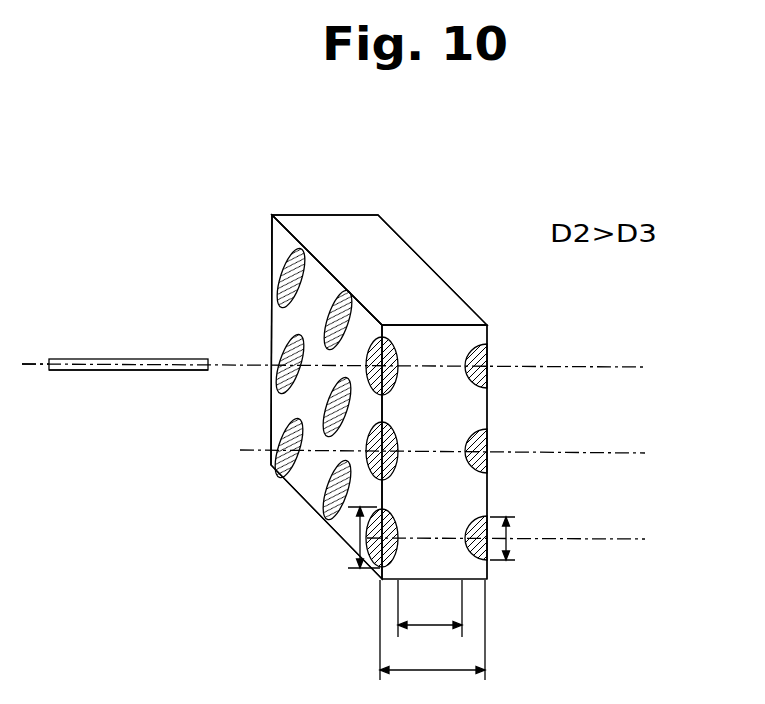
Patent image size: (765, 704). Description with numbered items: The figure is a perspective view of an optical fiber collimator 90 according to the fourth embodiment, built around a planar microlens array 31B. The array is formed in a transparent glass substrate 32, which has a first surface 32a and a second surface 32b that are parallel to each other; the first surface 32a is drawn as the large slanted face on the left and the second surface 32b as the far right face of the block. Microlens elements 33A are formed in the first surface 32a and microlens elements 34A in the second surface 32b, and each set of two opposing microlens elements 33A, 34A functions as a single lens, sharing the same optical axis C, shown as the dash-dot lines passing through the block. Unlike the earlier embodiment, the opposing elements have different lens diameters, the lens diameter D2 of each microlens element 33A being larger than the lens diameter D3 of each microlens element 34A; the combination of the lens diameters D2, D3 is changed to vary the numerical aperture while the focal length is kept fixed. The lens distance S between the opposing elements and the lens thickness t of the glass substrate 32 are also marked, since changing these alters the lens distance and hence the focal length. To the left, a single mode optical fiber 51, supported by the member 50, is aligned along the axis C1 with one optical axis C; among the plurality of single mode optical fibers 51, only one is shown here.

The optical fiber collimator 90 is at (245, 192).
The planar microlens array 31B is at (352, 212).
The glass substrate 32 is at (303, 213).
The first surface 32a is at (277, 233).
The second surface 32b is at (488, 328).
The microlens element 33A is at (284, 279).
The microlens element 34A is at (485, 373).
The plate / light source substrate 50 is at (108, 358).
The single mode optical fiber 51 is at (97, 372).
The optical axis C is at (617, 366).
The optical axis of plate C1 is at (38, 357).
The lens diameter D2 is at (355, 533).
The lens diameter D3 is at (507, 533).
The lens distance S is at (430, 608).
The lens thickness t is at (432, 630).